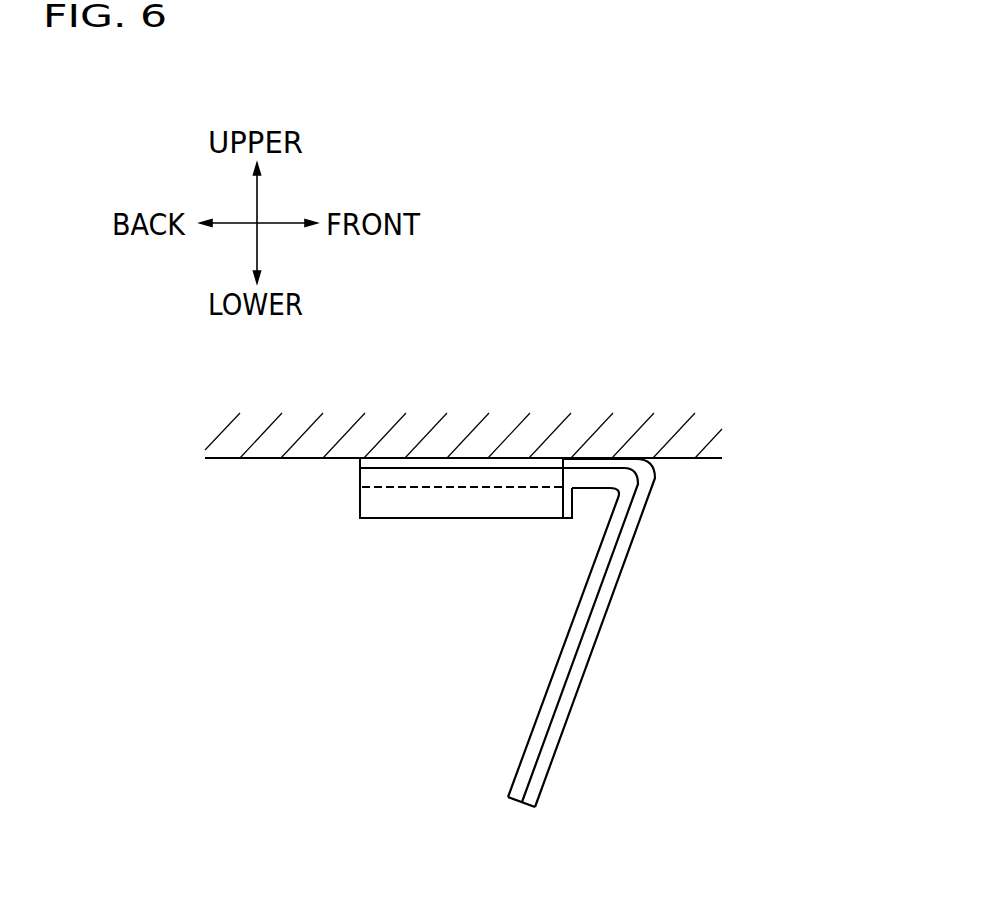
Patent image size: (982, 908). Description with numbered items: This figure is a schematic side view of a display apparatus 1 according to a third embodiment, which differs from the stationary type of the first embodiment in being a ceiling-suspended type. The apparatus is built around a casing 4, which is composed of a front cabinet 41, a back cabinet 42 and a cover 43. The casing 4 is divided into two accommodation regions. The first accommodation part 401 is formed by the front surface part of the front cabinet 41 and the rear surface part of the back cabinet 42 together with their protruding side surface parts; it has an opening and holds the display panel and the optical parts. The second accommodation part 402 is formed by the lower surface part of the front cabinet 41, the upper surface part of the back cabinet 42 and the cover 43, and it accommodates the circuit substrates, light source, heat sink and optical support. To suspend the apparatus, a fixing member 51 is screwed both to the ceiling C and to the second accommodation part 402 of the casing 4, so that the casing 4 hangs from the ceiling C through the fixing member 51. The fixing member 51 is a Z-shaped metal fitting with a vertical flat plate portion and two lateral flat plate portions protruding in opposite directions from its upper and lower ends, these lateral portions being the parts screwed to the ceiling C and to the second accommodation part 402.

The display apparatus 1 is at (742, 265).
The ceiling C is at (219, 459).
The casing 4 is at (336, 620).
The front cabinet 41 is at (543, 765).
The back cabinet 42 is at (555, 682).
The cover 43 is at (430, 497).
The fixing member 51 is at (387, 511).
The first accommodation part 401 is at (512, 812).
The second accommodation part 402 is at (347, 496).